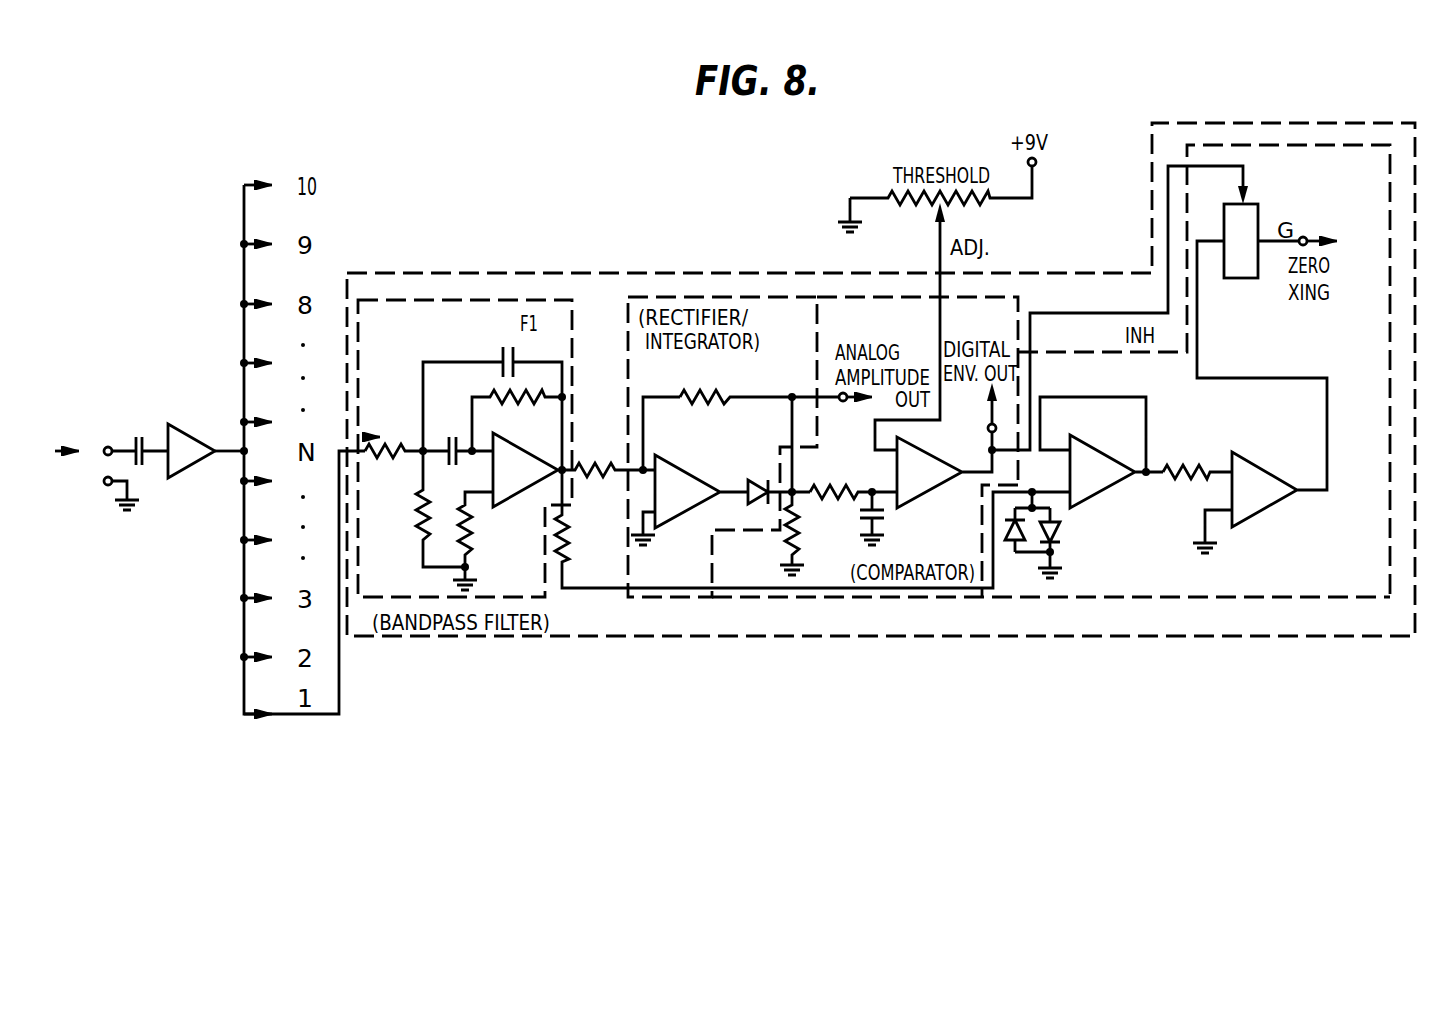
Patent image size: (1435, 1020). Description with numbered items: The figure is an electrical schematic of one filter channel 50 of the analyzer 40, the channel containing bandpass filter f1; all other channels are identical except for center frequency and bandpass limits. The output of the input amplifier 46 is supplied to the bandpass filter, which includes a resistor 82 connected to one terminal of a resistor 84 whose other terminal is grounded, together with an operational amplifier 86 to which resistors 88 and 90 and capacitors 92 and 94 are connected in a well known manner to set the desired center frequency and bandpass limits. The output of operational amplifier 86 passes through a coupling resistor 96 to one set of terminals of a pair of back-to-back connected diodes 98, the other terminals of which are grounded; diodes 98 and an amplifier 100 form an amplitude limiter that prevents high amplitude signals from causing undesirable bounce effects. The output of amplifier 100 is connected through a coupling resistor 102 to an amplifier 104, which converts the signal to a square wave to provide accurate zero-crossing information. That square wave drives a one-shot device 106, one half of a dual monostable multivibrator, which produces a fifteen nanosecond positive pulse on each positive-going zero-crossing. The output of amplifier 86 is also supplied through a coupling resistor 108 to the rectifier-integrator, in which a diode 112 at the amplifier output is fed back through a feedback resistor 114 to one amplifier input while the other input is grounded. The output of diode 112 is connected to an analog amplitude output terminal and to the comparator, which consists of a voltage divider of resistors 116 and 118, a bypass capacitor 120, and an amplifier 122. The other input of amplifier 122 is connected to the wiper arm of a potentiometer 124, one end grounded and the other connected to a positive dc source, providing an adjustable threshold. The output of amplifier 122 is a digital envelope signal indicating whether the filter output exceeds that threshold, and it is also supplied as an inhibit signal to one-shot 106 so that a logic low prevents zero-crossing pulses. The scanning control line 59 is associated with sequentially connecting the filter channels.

The analyzer 40 is at (680, 468).
The amplifier 46 is at (185, 438).
The filter channel 50 is at (1214, 668).
The line 59 is at (1142, 594).
The resistor 82 is at (393, 456).
The resistor 84 is at (418, 512).
The operational amplifier 86 is at (520, 448).
The resistor 88 is at (520, 395).
The resistor 90 is at (471, 536).
The capacitor 92 is at (503, 362).
The capacitor 94 is at (451, 436).
The coupling resistor 96 is at (571, 552).
The back-to-back connected diodes 98 is at (1067, 538).
The amplifier 100 is at (1087, 444).
The coupling resistor 102 is at (1189, 462).
The amplifier 104 is at (1254, 466).
The one-shot device 106 is at (1241, 280).
The coupling resistor 108 is at (642, 453).
The diode 112 is at (754, 480).
The feedback resistor 114 is at (727, 388).
The resistor 116 is at (850, 470).
The resistor 118 is at (801, 543).
The bypass capacitor 120 is at (864, 512).
The amplifier 122 is at (938, 458).
The potentiometer 124 is at (886, 193).